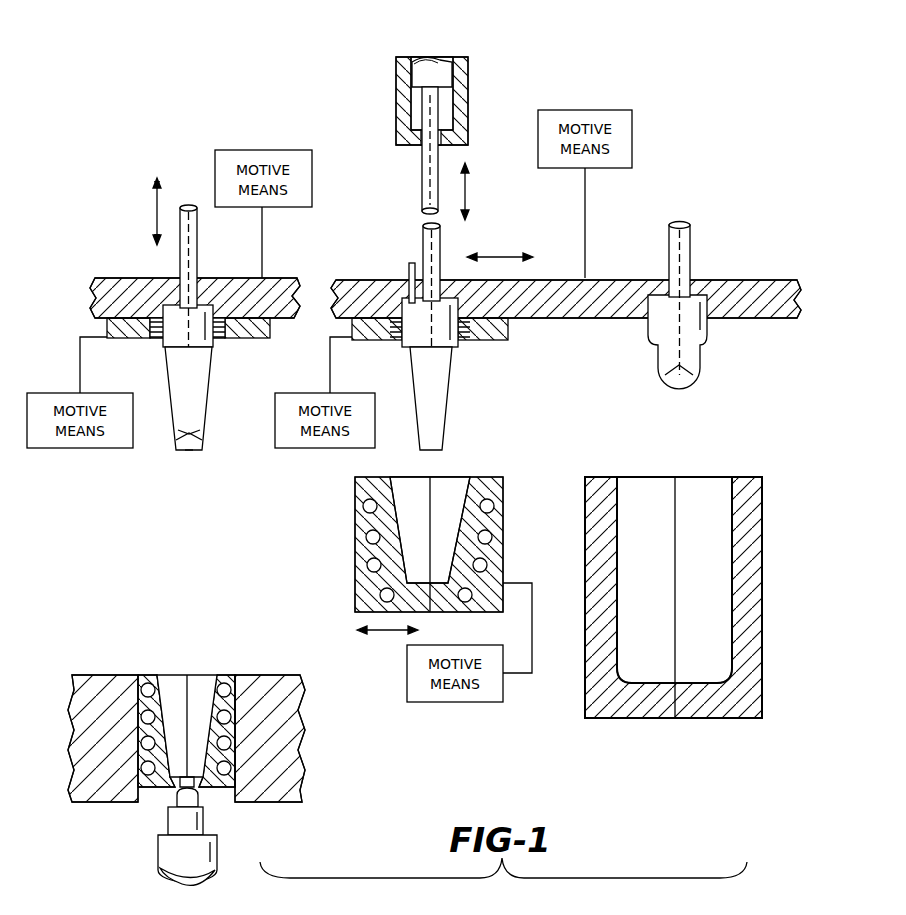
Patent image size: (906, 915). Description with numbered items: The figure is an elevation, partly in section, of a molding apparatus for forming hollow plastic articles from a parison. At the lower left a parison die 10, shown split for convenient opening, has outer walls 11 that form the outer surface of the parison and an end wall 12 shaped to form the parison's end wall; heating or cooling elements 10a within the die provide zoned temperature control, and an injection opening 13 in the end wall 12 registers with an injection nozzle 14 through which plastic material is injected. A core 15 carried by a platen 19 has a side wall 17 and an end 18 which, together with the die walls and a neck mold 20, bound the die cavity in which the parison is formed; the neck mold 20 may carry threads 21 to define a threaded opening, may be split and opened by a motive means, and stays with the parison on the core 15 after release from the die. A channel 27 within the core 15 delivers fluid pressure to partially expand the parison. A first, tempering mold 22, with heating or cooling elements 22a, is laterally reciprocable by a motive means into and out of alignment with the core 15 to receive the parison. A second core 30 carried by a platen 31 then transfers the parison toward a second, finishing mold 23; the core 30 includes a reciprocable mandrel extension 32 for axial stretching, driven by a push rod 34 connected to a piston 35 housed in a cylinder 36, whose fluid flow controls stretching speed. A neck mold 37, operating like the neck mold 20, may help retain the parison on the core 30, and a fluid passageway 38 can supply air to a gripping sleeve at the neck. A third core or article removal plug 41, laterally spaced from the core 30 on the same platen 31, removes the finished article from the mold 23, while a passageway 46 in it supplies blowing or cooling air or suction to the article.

The parison die 10 is at (235, 765).
The heating or cooling elements 10a is at (148, 690).
The outer walls 11 is at (187, 700).
The end wall 12 is at (177, 790).
The injection opening 13 is at (203, 792).
The injection nozzle 14 is at (172, 858).
The core 15 is at (180, 412).
The side wall 17 is at (200, 428).
The end 18 is at (190, 454).
The platen 19 is at (130, 290).
The neck mold 20 is at (245, 338).
The threads 21 is at (163, 336).
The first mold 22 is at (360, 597).
The heating or cooling elements 22a is at (367, 565).
The second mold 23 is at (755, 683).
The channel 27 is at (198, 238).
The second core 30 is at (437, 405).
The platen 31 is at (355, 285).
The mandrel extension 32 is at (423, 232).
The push rod 34 is at (426, 163).
The piston 35 is at (432, 72).
The cylinder 36 is at (400, 90).
The neck mold 37 is at (495, 340).
The fluid passageway 38 is at (411, 266).
The third core 41 is at (690, 368).
The passageway 46 is at (680, 320).